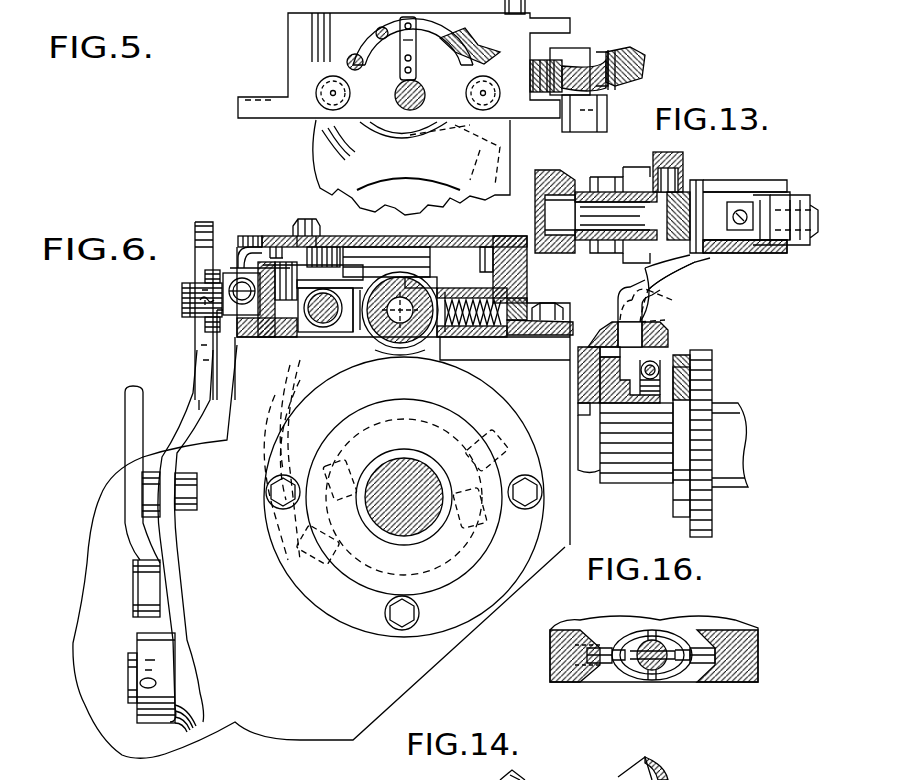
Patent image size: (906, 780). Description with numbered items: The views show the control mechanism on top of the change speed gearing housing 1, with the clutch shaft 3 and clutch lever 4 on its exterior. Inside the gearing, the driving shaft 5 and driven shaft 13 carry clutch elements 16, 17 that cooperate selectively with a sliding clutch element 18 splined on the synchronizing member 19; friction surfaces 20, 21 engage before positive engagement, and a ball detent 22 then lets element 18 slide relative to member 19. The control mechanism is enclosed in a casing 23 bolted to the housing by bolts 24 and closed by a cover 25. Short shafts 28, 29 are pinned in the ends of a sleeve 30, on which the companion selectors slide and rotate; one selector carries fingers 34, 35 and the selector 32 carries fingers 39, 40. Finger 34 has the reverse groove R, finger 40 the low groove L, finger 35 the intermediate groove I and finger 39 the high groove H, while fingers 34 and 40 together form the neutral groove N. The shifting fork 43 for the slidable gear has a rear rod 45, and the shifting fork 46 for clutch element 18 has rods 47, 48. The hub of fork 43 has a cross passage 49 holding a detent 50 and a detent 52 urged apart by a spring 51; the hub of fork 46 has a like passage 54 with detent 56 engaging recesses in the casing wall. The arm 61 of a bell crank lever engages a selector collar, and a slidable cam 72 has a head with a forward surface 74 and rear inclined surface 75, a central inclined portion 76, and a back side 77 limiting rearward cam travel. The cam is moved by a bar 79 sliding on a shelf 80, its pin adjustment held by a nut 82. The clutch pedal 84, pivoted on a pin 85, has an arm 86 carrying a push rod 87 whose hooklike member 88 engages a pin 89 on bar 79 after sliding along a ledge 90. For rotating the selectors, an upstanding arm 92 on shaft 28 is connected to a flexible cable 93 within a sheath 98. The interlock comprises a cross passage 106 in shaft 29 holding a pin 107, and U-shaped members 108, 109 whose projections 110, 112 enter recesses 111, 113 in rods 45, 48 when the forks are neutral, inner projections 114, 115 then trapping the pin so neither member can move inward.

In FIG. 6, the change speed gearing housing 1 is at (290, 724).
In FIG. 6, the shaft 3 is at (131, 672).
In FIG. 6, the lever 4 is at (160, 710).
In FIG. 6, the driving shaft 5 is at (307, 323).
In FIG. 6, the driven shaft 13 is at (425, 520).
In FIG. 6, the clutch element 16 is at (590, 360).
In FIG. 6, the clutch element 17 is at (713, 365).
In FIG. 6, the sliding clutch element 18 is at (620, 325).
In FIG. 6, the synchronizing member 19 is at (620, 410).
In FIG. 6, the friction surface 20 is at (650, 330).
In FIG. 6, the friction surface 21 is at (605, 345).
In FIG. 6, the ball detent 22 is at (658, 365).
In FIG. 5, the casing 23 is at (298, 60).
In FIG. 13, the casing 23 is at (548, 178).
In FIG. 6, the casing 23 is at (530, 292).
In FIG. 16, the casing 23 is at (758, 650).
In FIG. 6, the bolts 24 is at (552, 307).
In FIG. 5, the cover 25 is at (308, 22).
In FIG. 6, the cover 25 is at (398, 240).
In FIG. 5, the short shaft 28 is at (398, 96).
In FIG. 16, the short shaft 29 is at (654, 638).
In FIG. 6, the sleeve 30 is at (400, 340).
In FIG. 13, the selector 32 is at (604, 172).
In FIG. 6, the finger 34 is at (420, 277).
In FIG. 6, the finger 35 is at (328, 333).
In FIG. 6, the finger 39 is at (368, 238).
In FIG. 6, the finger 40 is at (470, 342).
In FIG. 5, the shifting fork 43 is at (485, 178).
In FIG. 6, the shifting fork 43 is at (487, 423).
In FIG. 16, the rod 45 is at (565, 680).
In FIG. 5, the shifting fork 46 is at (330, 135).
In FIG. 13, the shifting fork 46 is at (680, 262).
In FIG. 6, the shifting fork 46 is at (290, 398).
In FIG. 13, the rod 47 is at (632, 253).
In FIG. 13, the rod 48 is at (811, 195).
In FIG. 6, the rod 48 is at (288, 372).
In FIG. 16, the rod 48 is at (745, 628).
In FIG. 6, the cross passage 49 is at (480, 288).
In FIG. 6, the detent 50 is at (445, 290).
In FIG. 6, the spring 51 is at (487, 337).
In FIG. 6, the detent 52 is at (527, 287).
In FIG. 13, the passage 54 is at (760, 205).
In FIG. 13, the detent 56 is at (742, 210).
In FIG. 13, the arm 61 is at (660, 156).
In FIG. 6, the slidable cam 72 is at (248, 240).
In FIG. 14, the forward surface 74 is at (470, 772).
In FIG. 14, the rear inclined surface 75 is at (524, 778).
In FIG. 14, the inclined portion 76 is at (625, 773).
In FIG. 14, the back side 77 is at (665, 768).
In FIG. 5, the bar 79 is at (560, 66).
In FIG. 6, the bar 79 is at (242, 296).
In FIG. 6, the shelf 80 is at (229, 342).
In FIG. 6, the nut 82 is at (240, 289).
In FIG. 6, the clutch pedal 84 is at (135, 445).
In FIG. 6, the pin 85 is at (143, 594).
In FIG. 6, the arm 86 is at (197, 410).
In FIG. 6, the push rod 87 is at (185, 303).
In FIG. 5, the hooklike member 88 is at (600, 102).
In FIG. 6, the hooklike member 88 is at (205, 226).
In FIG. 5, the pin 89 is at (610, 52).
In FIG. 6, the pin 89 is at (205, 286).
In FIG. 5, the ledge 90 is at (581, 116).
In FIG. 6, the ledge 90 is at (205, 328).
In FIG. 5, the upstanding arm 92 is at (418, 70).
In FIG. 5, the flexible cable 93 is at (636, 52).
In FIG. 5, the sheath 98 is at (556, 72).
In FIG. 16, the cross passage 106 is at (655, 672).
In FIG. 16, the pin 107 is at (680, 675).
In FIG. 16, the U-shaped member 108 is at (630, 640).
In FIG. 16, the U-shaped member 109 is at (685, 640).
In FIG. 16, the projection 110 is at (605, 665).
In FIG. 16, the recess 111 is at (585, 640).
In FIG. 16, the projecting portion 112 is at (720, 680).
In FIG. 16, the recess 113 is at (730, 675).
In FIG. 16, the projection 114 is at (628, 672).
In FIG. 16, the projection 115 is at (692, 668).
In FIG. 6, the longitudinal groove H is at (298, 224).
In FIG. 6, the longitudinal groove I is at (322, 333).
In FIG. 6, the longitudinal groove L is at (470, 355).
In FIG. 6, the groove N is at (530, 300).
In FIG. 6, the longitudinal groove R is at (458, 286).